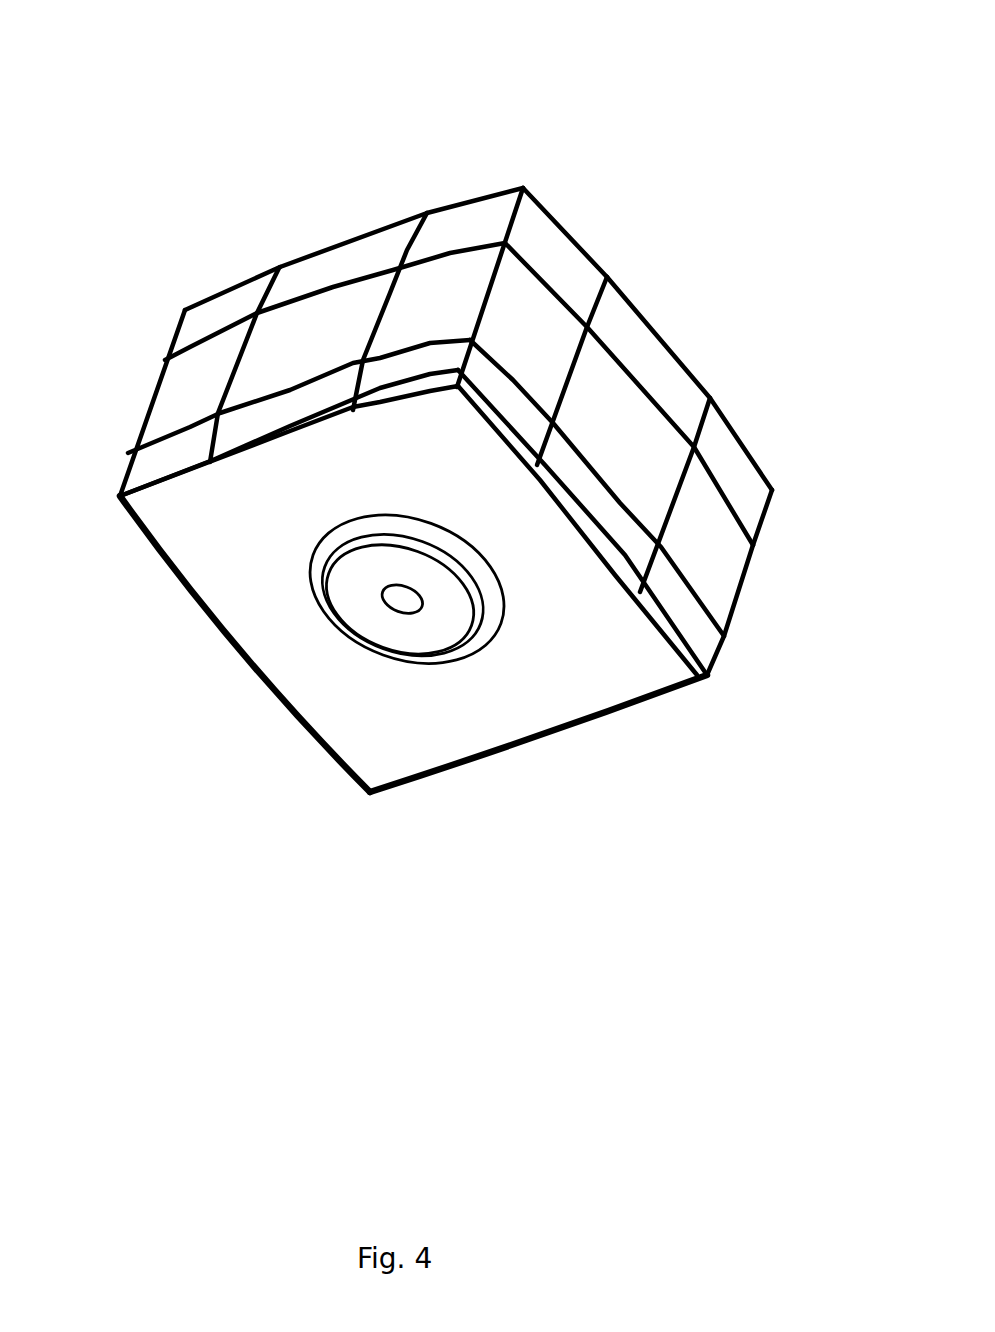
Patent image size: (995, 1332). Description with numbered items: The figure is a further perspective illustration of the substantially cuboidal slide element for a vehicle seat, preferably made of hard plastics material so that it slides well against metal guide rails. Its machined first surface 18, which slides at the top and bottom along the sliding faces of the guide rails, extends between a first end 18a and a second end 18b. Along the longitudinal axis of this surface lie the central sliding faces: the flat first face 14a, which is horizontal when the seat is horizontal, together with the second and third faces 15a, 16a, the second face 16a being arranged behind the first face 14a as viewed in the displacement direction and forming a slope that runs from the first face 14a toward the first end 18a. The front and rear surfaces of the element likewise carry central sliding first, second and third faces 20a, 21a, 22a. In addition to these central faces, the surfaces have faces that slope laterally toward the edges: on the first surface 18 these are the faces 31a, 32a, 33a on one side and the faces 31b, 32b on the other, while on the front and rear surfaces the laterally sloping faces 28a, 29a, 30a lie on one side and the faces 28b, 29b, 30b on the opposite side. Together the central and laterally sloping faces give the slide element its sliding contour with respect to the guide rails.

The first surface 18 is at (128, 185).
The first end 18a is at (142, 393).
The second end 18b is at (533, 340).
The first face 14a is at (347, 345).
The second face 15a is at (477, 290).
The second face 16a is at (228, 350).
The first face 20a is at (653, 447).
The second face 21a is at (602, 335).
The third face 22a is at (725, 562).
The laterally sloping face 28a is at (568, 266).
The laterally sloping face 28b is at (527, 255).
The laterally sloping face 29a is at (755, 500).
The laterally sloping face 29b is at (711, 678).
The laterally sloping face 30a is at (652, 370).
The laterally sloping face 30b is at (627, 544).
The laterally sloping face 31a is at (187, 342).
The laterally sloping face 31b is at (153, 458).
The laterally sloping face 32a is at (433, 248).
The laterally sloping face 32b is at (350, 470).
The laterally sloping face 33a is at (303, 285).